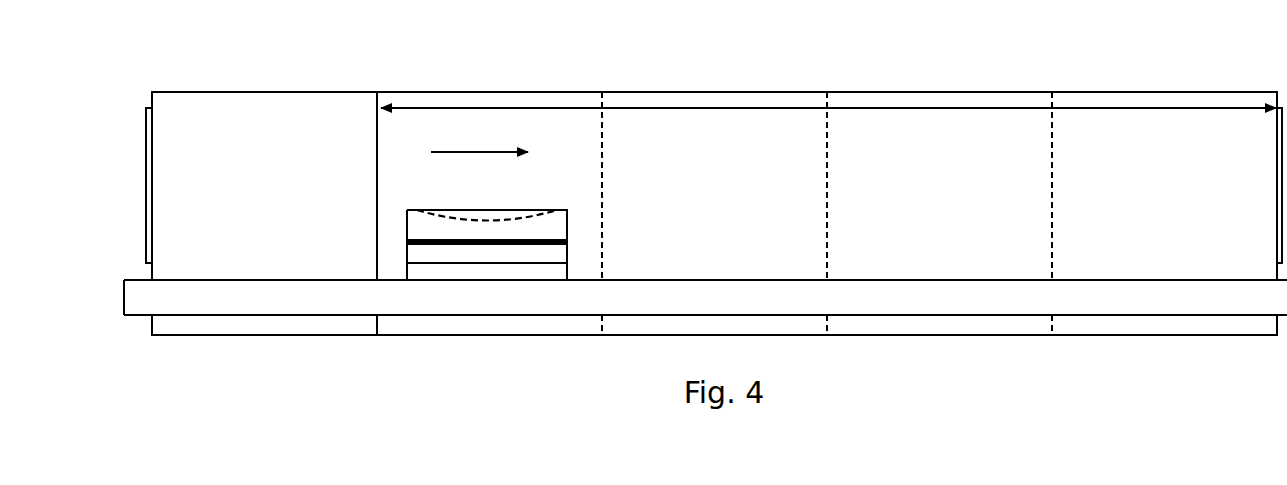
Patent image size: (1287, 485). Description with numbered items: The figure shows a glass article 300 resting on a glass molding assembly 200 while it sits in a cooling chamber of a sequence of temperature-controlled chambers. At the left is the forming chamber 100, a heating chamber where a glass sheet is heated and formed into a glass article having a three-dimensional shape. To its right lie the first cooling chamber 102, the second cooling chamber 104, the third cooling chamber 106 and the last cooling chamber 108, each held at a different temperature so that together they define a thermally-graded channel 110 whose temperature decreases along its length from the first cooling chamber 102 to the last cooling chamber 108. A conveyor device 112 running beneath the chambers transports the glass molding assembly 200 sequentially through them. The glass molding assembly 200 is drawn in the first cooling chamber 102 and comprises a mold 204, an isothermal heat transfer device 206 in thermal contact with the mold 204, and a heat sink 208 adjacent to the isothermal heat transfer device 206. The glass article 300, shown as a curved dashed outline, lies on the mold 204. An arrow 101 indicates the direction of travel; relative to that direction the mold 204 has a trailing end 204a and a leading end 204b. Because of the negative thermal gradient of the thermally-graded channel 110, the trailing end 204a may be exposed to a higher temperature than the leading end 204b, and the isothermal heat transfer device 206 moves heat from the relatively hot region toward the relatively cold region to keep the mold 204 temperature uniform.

The forming chamber 100 is at (269, 92).
The arrow 101 is at (467, 150).
The first cooling chamber 102 is at (493, 92).
The second cooling chamber 104 is at (723, 92).
The third cooling chamber 106 is at (942, 92).
The last cooling chamber 108 is at (1155, 92).
The thermally-graded channel 110 is at (845, 108).
The conveyor device 112 is at (297, 303).
The glass molding assembly 200 is at (562, 208).
The mold 204 is at (415, 227).
The trailing end of the mold 204a is at (407, 228).
The leading end of the mold 204b is at (567, 221).
The isothermal heat transfer device 206 is at (462, 253).
The heat sink 208 is at (517, 272).
The glass article 300 is at (483, 222).